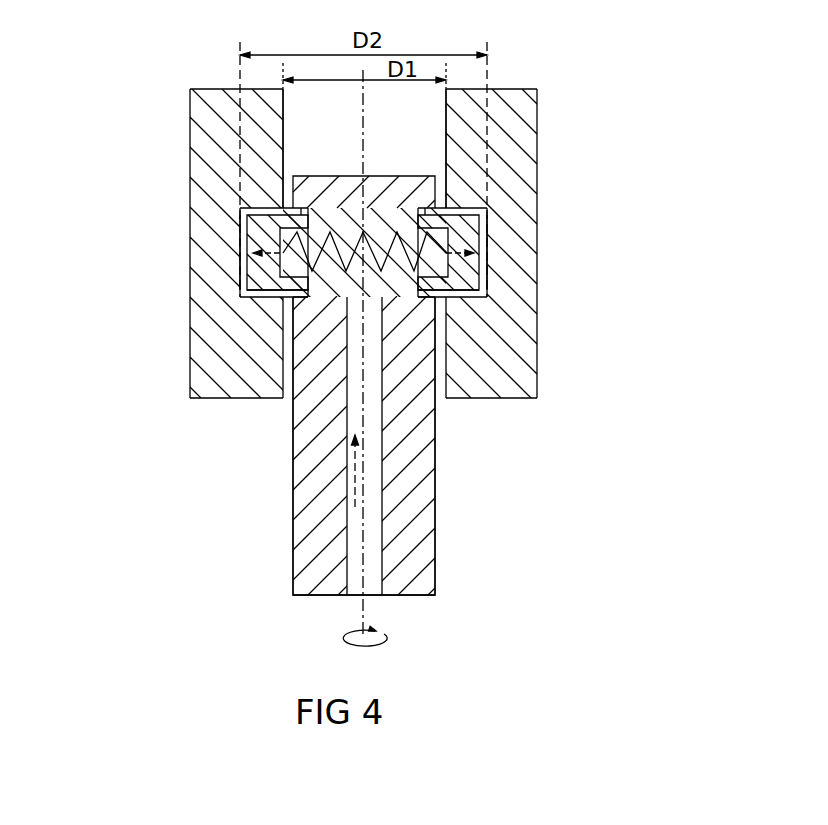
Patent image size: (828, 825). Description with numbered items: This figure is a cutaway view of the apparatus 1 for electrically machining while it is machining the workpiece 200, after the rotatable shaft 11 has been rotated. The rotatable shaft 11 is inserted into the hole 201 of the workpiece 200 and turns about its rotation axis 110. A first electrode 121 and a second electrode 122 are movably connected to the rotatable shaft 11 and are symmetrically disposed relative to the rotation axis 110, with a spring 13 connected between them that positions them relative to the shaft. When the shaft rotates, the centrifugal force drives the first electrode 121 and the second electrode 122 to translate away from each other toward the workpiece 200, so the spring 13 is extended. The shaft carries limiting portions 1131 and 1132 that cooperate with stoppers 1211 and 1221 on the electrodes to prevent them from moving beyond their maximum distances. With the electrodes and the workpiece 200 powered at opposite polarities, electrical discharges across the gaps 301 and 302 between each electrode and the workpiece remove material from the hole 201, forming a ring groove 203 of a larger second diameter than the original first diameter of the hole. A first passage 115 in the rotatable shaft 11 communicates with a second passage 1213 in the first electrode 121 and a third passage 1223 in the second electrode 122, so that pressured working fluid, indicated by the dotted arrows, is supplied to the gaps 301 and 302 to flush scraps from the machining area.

The apparatus for electrically machining 1 is at (437, 472).
The rotatable shaft 11 is at (322, 512).
The rotation axis 110 is at (372, 622).
The first passage 115 is at (355, 587).
The limiting portion 1131 is at (300, 290).
The limiting portion 1132 is at (465, 298).
The first electrode 121 is at (267, 275).
The stopper 1211 is at (300, 295).
The second passage 1213 is at (255, 252).
The second electrode 122 is at (473, 270).
The stopper 1221 is at (452, 298).
The third passage 1223 is at (478, 252).
The spring 13 is at (375, 250).
The workpiece 200 is at (540, 203).
The hole 201 is at (298, 132).
The ring groove 203 is at (262, 212).
The gap 301 is at (247, 270).
The gap 302 is at (490, 283).